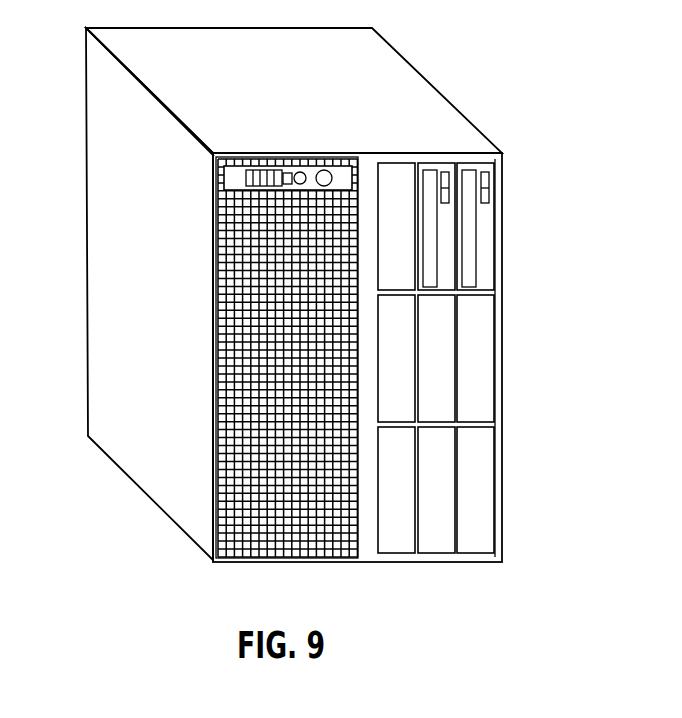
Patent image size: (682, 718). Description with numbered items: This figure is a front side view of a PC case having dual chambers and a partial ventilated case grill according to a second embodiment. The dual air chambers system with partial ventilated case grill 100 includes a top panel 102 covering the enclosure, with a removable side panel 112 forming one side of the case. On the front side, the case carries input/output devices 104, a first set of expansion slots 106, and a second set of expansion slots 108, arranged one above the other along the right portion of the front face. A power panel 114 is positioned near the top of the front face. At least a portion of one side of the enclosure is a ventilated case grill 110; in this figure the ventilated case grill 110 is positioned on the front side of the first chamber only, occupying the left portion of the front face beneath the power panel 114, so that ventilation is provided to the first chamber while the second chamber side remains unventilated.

The dual air chambers system with partial ventilated case grill 100 is at (549, 67).
The top panel 102 is at (390, 60).
The input/output devices 104 is at (500, 243).
The first set of expansion slots 106 is at (500, 337).
The second set of expansion slots 108 is at (500, 433).
The ventilated case grill 110 is at (213, 552).
The removable side panel 112 is at (108, 334).
The power panel 114 is at (225, 177).